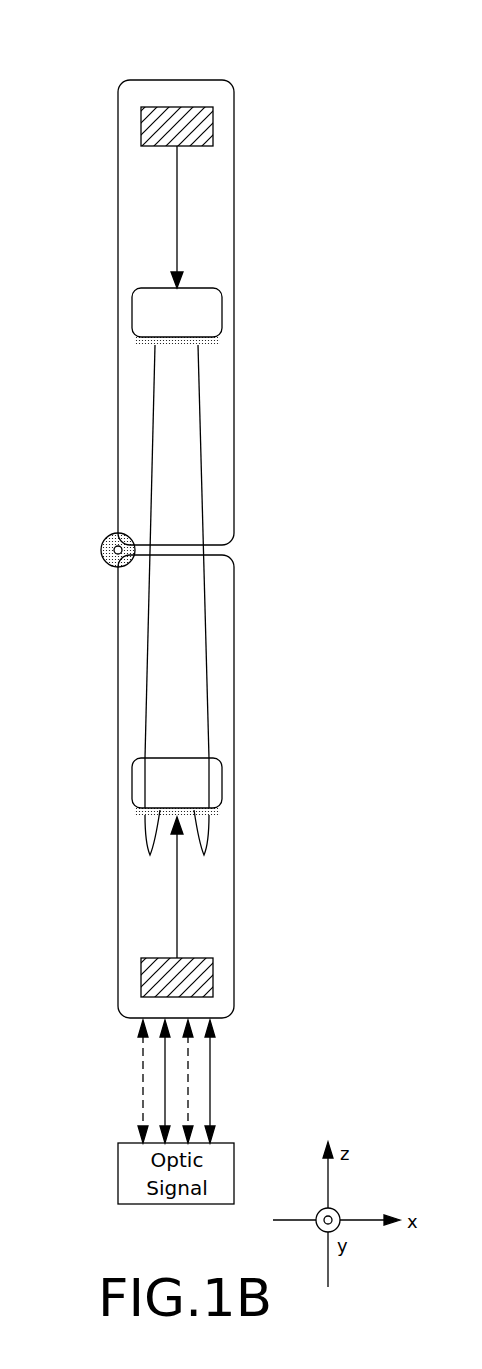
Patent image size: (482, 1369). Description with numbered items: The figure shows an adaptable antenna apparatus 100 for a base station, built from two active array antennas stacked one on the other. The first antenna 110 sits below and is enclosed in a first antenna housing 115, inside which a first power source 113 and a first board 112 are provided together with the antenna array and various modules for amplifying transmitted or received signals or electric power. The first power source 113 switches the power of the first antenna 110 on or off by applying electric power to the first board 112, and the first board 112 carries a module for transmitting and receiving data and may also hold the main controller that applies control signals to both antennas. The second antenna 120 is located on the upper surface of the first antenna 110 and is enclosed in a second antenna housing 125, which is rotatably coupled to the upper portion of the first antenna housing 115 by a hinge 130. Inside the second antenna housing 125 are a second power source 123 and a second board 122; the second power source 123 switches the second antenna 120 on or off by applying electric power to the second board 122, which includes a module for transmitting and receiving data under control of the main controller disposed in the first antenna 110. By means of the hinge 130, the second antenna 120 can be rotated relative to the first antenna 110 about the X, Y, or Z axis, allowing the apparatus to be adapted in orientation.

The adaptable antenna apparatus 100 is at (180, 58).
The first antenna 110 is at (234, 710).
The first board 112 is at (222, 782).
The first power source 113 is at (213, 975).
The first antenna housing 115 is at (210, 895).
The second antenna 120 is at (234, 385).
The second board 122 is at (222, 312).
The second power source 123 is at (213, 122).
The second antenna housing 125 is at (210, 208).
The hinge 130 is at (102, 548).